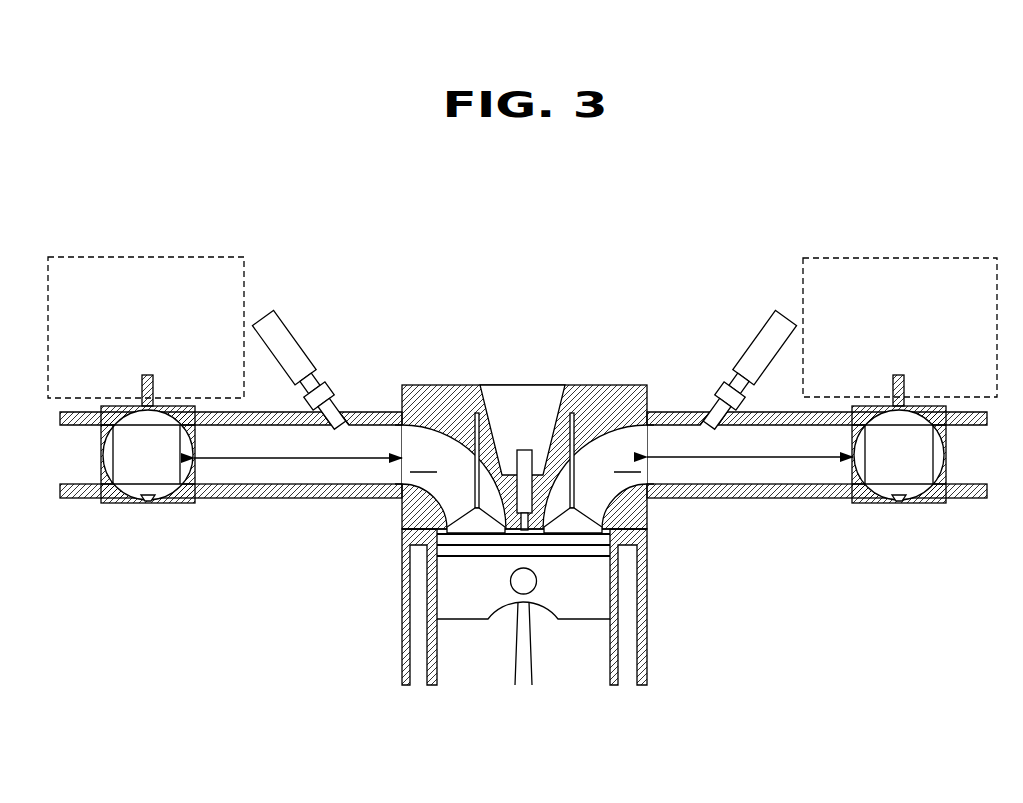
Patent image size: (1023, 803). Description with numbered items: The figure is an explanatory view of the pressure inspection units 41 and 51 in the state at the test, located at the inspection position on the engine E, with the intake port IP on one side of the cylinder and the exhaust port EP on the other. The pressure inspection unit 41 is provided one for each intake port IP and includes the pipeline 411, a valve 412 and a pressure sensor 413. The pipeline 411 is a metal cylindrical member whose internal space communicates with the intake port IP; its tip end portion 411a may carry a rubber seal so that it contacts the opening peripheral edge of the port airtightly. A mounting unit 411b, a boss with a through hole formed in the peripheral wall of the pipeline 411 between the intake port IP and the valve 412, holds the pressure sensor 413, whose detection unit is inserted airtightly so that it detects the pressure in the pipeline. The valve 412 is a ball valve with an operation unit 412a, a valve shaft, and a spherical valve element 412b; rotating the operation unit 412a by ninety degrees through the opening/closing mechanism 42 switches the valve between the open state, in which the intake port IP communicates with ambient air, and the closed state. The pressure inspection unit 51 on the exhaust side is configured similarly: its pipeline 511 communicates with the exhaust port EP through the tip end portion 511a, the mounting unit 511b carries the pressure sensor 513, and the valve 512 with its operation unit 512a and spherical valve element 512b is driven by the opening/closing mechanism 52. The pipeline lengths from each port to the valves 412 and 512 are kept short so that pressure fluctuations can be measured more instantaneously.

The engine E is at (524, 486).
The pressure inspection unit 41 is at (814, 453).
The pipeline 411 is at (817, 495).
The tip end portion 411a is at (675, 496).
The mounting unit 411b is at (684, 379).
The valve 412 is at (902, 441).
The operation unit 412a is at (875, 356).
The valve element 412b is at (864, 523).
The pressure sensor 413 is at (747, 353).
The opening/closing mechanism 42 is at (900, 293).
The pressure inspection unit 51 is at (232, 447).
The pipeline 511 is at (231, 495).
The tip end portion 511a is at (363, 499).
The mounting unit 511b is at (363, 381).
The valve 512 is at (160, 443).
The operation unit 512a is at (126, 357).
The valve element 512b is at (181, 518).
The pressure sensor 513 is at (301, 354).
The opening/closing mechanism 52 is at (146, 293).